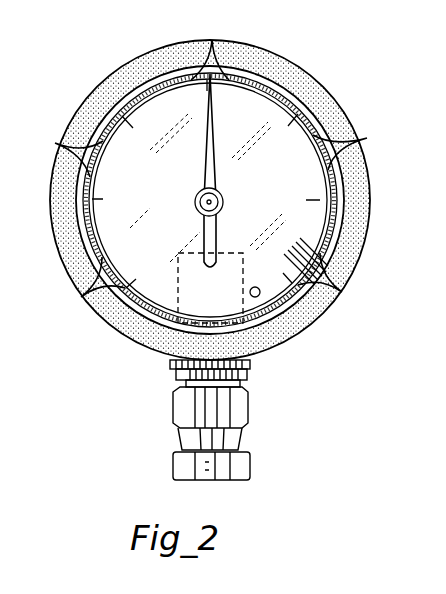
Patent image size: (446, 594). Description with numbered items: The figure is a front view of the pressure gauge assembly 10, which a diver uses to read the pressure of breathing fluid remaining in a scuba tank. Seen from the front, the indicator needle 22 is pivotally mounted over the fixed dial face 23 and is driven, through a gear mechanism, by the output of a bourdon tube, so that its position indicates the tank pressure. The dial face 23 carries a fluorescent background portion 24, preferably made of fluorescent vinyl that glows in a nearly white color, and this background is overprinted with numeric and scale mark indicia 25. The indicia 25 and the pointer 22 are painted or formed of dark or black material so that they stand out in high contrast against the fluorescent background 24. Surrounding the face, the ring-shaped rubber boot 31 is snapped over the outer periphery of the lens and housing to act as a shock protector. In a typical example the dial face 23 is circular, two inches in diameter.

The pressure gauge assembly 10 is at (213, 247).
The ring-shaped rubber boot 31 is at (108, 80).
The numeric and scale mark indicia 25 is at (212, 41).
The fluorescent background portion 24 is at (184, 189).
The indicator needle 22 is at (204, 236).
The dial face 23 is at (173, 300).